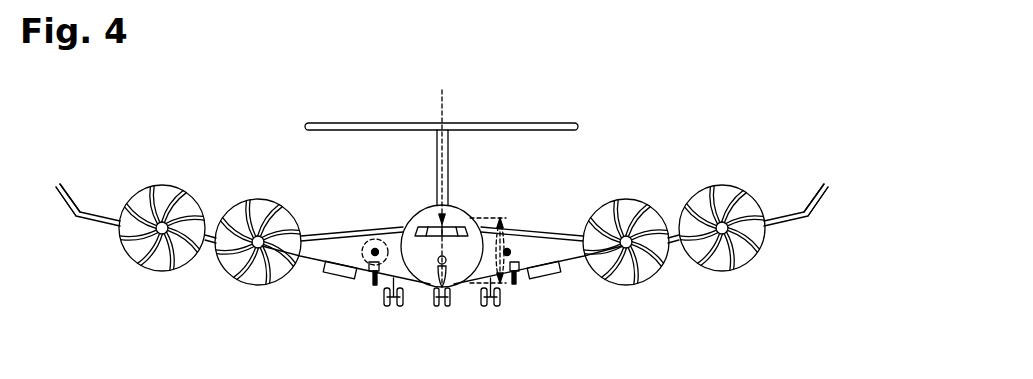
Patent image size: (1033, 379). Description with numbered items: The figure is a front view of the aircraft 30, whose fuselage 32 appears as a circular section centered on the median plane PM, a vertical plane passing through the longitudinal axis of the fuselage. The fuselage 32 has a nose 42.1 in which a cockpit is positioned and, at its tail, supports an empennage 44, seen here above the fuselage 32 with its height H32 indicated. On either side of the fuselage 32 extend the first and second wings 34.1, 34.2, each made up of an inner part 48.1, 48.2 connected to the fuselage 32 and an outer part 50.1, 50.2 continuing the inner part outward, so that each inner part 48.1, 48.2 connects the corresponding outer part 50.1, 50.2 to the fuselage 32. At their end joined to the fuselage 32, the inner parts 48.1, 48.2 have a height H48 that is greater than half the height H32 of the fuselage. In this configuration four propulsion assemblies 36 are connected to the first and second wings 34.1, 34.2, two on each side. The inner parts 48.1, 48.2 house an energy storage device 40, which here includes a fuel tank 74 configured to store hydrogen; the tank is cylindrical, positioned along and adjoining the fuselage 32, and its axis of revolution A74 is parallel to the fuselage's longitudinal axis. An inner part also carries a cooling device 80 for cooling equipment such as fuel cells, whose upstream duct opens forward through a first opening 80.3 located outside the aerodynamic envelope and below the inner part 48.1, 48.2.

The aircraft 30 is at (712, 131).
The fuselage 32 is at (423, 197).
The height of the fuselage H32 is at (465, 213).
The first wing 34.1 is at (405, 187).
The second wing 34.2 is at (812, 166).
The propulsion assembly 36 is at (213, 267).
The energy storage device 40 is at (384, 300).
The nose 42.1 is at (460, 264).
The empennage 44 is at (483, 122).
The inner part of the first wing 48.1 is at (330, 228).
The inner part of the second wing 48.2 is at (562, 228).
The height of the inner parts H48 is at (510, 218).
The outer part of the first wing 50.1 is at (102, 225).
The outer part of the second wing 50.2 is at (787, 228).
The fuel tank 74 is at (367, 275).
The axis of revolution of the fuel tank A74 is at (382, 238).
The cooling device 80 is at (323, 277).
The first opening 80.3 is at (340, 277).
The median plane PM is at (437, 105).